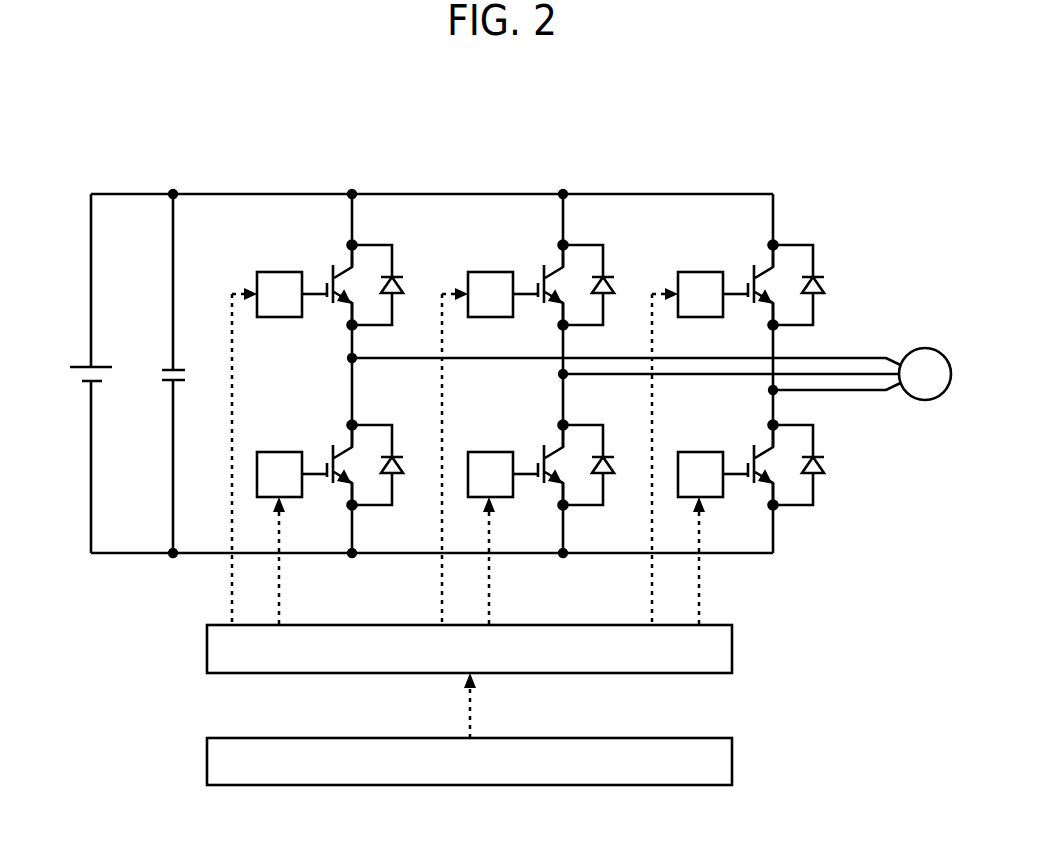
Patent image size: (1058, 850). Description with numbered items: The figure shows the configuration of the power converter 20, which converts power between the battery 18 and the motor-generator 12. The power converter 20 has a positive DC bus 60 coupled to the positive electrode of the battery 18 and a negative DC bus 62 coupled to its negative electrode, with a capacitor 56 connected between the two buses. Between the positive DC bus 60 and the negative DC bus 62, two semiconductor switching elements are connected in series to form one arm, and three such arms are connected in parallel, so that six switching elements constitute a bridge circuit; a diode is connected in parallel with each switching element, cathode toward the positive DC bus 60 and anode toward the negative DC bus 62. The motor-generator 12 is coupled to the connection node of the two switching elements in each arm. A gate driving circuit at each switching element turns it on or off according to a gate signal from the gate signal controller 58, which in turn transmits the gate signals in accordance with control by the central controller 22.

The motor-generator 12 is at (926, 347).
The battery 18 is at (78, 367).
The power converter 20 is at (573, 131).
The central controller 22 is at (733, 762).
The capacitor 56 is at (163, 370).
The gate signal controller 58 is at (733, 647).
The positive DC bus 60 is at (316, 194).
The negative DC bus 62 is at (315, 553).